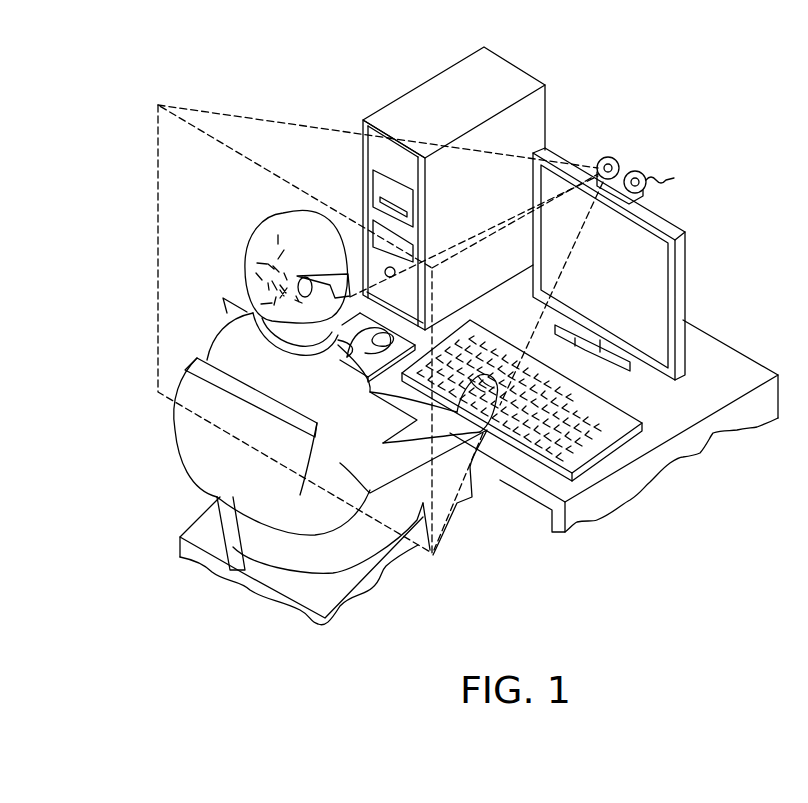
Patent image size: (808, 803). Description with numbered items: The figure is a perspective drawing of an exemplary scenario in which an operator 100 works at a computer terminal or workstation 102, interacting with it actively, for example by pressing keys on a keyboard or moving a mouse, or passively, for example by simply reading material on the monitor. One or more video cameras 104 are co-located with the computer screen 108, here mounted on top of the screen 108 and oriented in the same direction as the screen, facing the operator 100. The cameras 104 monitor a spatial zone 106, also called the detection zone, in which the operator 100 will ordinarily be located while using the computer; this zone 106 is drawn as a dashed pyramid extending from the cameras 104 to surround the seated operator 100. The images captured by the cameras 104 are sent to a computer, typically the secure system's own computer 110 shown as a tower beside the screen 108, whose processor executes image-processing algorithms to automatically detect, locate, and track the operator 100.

The operator 100 is at (247, 228).
The computer terminal or workstation 102 is at (635, 74).
The video cameras 104 is at (615, 153).
The spatial zone 106 is at (158, 190).
The computer screen 108 is at (690, 257).
The computer 110 is at (430, 88).